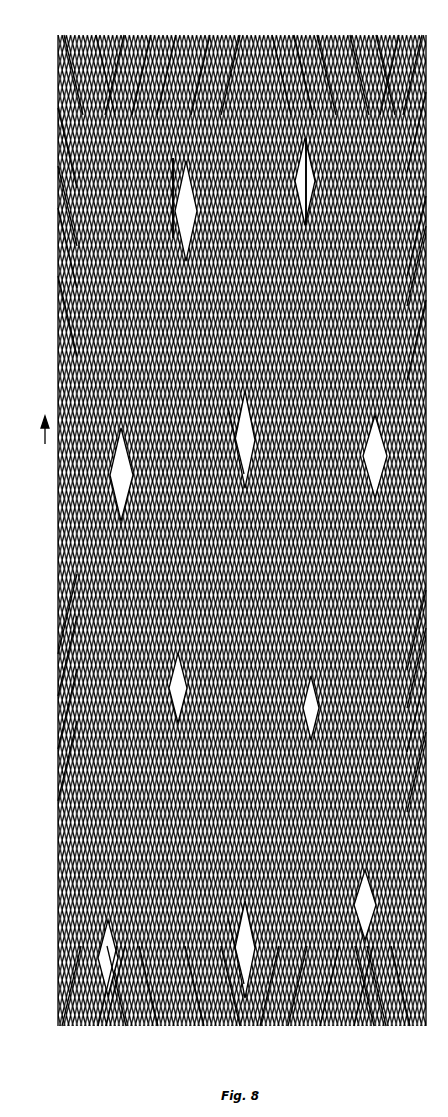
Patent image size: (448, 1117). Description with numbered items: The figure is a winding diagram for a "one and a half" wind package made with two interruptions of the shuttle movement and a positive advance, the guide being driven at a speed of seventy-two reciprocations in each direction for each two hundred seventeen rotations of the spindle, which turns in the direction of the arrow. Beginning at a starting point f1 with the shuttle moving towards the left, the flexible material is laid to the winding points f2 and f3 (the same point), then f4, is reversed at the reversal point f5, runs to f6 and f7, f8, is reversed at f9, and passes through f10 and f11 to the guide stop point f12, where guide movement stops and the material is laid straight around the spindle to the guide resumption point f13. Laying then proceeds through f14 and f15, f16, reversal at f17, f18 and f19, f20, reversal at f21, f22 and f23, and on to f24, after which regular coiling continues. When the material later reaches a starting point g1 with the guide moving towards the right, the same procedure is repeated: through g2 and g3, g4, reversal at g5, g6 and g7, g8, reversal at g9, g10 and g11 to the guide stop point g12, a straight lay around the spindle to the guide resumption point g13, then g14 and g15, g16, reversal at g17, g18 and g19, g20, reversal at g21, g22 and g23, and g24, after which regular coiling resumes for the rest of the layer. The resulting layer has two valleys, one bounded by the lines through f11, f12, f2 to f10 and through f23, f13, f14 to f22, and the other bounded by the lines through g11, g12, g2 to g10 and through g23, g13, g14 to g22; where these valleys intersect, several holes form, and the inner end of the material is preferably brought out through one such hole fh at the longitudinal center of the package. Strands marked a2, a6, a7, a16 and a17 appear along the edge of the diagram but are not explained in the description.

The starting point f1 is at (314, 28).
The winding point f2 is at (60, 1019).
The winding point f3 is at (63, 28).
The winding point f4 is at (50, 110).
The reversal point f5 is at (50, 168).
The winding point f6 is at (282, 1019).
The winding point f7 is at (292, 28).
The winding point f8 is at (418, 576).
The reversal point f9 is at (418, 614).
The winding point f10 is at (314, 1019).
The winding point f11 is at (350, 28).
The guide stop point f12 is at (298, 130).
The guide resumption point f13 is at (298, 217).
The winding point f14 is at (90, 1019).
The winding point f15 is at (98, 28).
The winding point f16 is at (50, 210).
The reversal point f17 is at (50, 278).
The winding point f18 is at (254, 1019).
The winding point f19 is at (272, 28).
The winding point f20 is at (418, 658).
The reversal point f21 is at (418, 718).
The winding point f22 is at (346, 1019).
The winding point f23 is at (377, 28).
The winding point f24 is at (98, 1019).
The hole fh is at (236, 696).
The starting point g1 is at (172, 23).
The winding point g2 is at (400, 1019).
The winding point g3 is at (417, 23).
The winding point g4 is at (418, 78).
The reversal point g5 is at (418, 182).
The winding point g6 is at (200, 1019).
The winding point g7 is at (206, 23).
The winding point g8 is at (50, 656).
The reversal point g9 is at (50, 698).
The winding point g10 is at (150, 1019).
The winding point g11 is at (150, 23).
The guide stop point g12 is at (165, 153).
The guide resumption point g13 is at (165, 228).
The winding point g14 is at (378, 1019).
The winding point g15 is at (399, 23).
The winding point g16 is at (418, 212).
The reversal point g17 is at (418, 286).
The winding point g18 is at (234, 1019).
The winding point g19 is at (240, 23).
The winding point g20 is at (50, 751).
The reversal point g21 is at (50, 803).
The winding point g22 is at (120, 1019).
The winding point g23 is at (124, 23).
The winding point g24 is at (366, 1019).
The core strand a2 is at (438, 214).
The core strand a6 is at (438, 178).
The core strand a7 is at (438, 244).
The core strand a16 is at (438, 114).
The core strand a17 is at (438, 158).